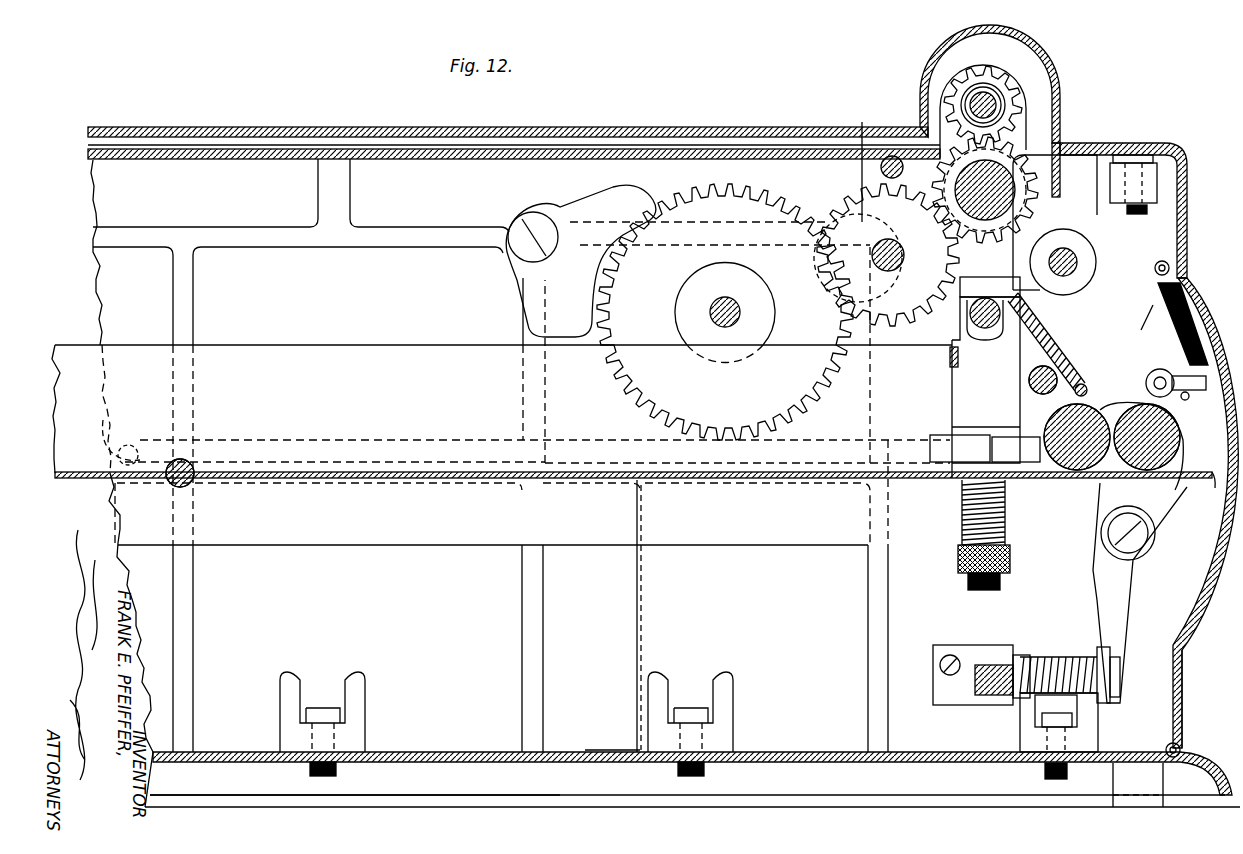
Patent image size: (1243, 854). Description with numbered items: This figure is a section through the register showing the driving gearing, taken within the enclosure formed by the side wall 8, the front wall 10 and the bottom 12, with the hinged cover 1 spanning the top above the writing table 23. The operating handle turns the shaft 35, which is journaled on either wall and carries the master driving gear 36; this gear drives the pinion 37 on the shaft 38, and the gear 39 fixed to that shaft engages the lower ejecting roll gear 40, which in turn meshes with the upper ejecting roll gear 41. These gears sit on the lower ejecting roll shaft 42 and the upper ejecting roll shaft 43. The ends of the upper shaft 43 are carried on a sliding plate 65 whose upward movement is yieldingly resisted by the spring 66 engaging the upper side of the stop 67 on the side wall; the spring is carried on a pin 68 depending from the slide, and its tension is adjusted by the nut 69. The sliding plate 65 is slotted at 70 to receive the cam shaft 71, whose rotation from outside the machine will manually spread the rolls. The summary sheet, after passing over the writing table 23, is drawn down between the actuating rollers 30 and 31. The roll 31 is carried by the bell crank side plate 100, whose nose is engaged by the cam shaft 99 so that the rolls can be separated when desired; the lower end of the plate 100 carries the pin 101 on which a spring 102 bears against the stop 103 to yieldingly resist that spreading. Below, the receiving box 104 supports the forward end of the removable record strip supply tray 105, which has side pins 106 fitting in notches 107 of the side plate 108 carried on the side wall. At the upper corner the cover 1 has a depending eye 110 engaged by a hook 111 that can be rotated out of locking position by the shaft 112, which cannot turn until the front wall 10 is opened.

The cover 1 is at (330, 137).
The side wall 8 is at (108, 192).
The front wall 10 is at (1180, 662).
The bottom 12 is at (547, 742).
The writing table 23 is at (388, 160).
The actuating roller 30 is at (1097, 408).
The actuating roller 31 is at (1180, 445).
The shaft 35 is at (720, 300).
The master driving gear 36 is at (640, 330).
The pinion 37 is at (880, 245).
The shaft 38 is at (850, 240).
The gear 39 is at (857, 200).
The lower ejecting roll gear 40 is at (930, 153).
The upper ejecting roll gear 41 is at (957, 90).
The lower ejecting roll shaft 42 is at (1000, 168).
The upper ejecting roll shaft 43 is at (952, 103).
The sliding plate 65 is at (965, 378).
The spring 66 is at (966, 525).
The stop 67 is at (945, 465).
The pin 68 is at (968, 583).
The nut 69 is at (960, 563).
The slot 70 is at (952, 357).
The cam shaft 71 is at (978, 330).
The cam shaft 99 is at (1040, 382).
The bell crank side plate 100 is at (1092, 392).
The pin 101 is at (1093, 665).
The spring 102 is at (1037, 657).
The stop 103 is at (1008, 702).
The receiving box 104 is at (640, 578).
The record strip supply tray 105 is at (382, 348).
The side pin 106 is at (104, 438).
The notch 107 is at (132, 445).
The side plate 108 is at (290, 450).
The depending eye 110 is at (1022, 280).
The hook 111 is at (1078, 215).
The shaft 112 is at (1077, 262).